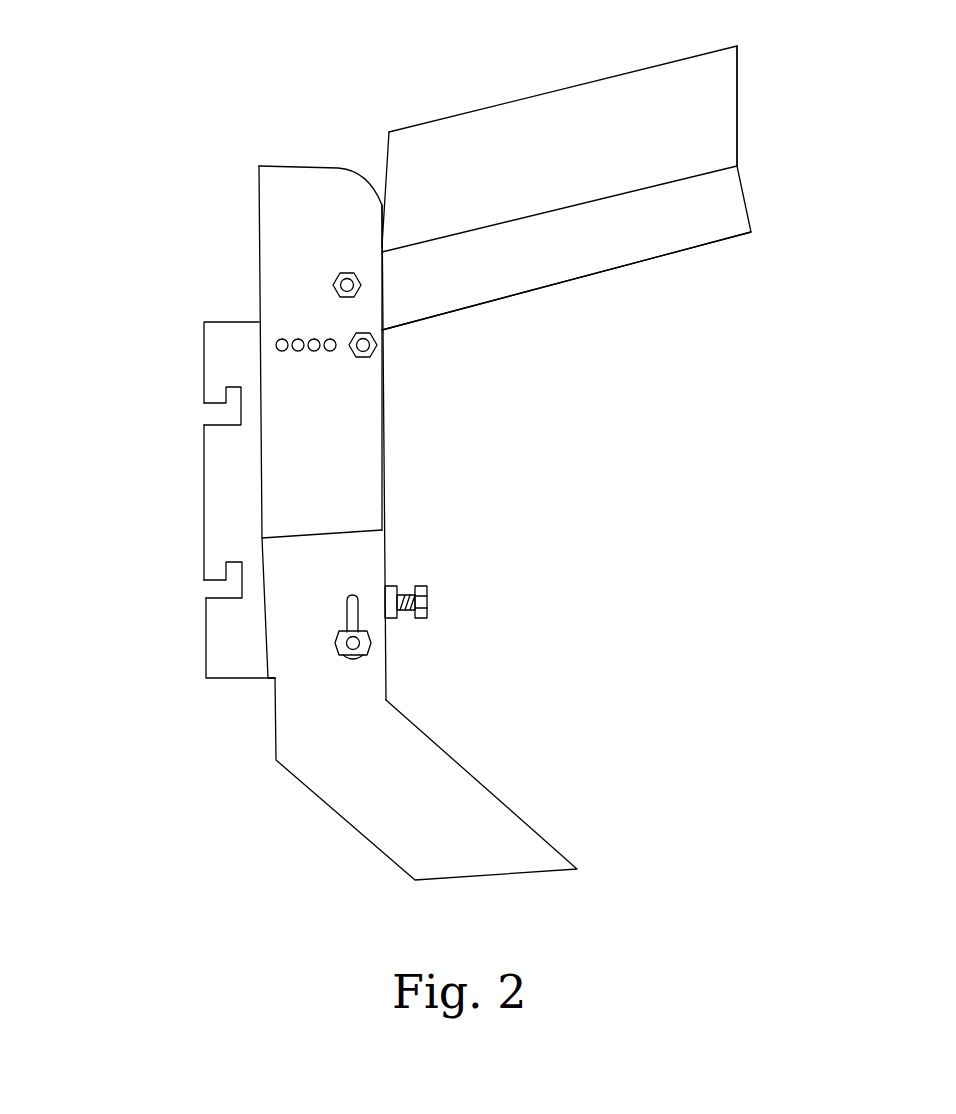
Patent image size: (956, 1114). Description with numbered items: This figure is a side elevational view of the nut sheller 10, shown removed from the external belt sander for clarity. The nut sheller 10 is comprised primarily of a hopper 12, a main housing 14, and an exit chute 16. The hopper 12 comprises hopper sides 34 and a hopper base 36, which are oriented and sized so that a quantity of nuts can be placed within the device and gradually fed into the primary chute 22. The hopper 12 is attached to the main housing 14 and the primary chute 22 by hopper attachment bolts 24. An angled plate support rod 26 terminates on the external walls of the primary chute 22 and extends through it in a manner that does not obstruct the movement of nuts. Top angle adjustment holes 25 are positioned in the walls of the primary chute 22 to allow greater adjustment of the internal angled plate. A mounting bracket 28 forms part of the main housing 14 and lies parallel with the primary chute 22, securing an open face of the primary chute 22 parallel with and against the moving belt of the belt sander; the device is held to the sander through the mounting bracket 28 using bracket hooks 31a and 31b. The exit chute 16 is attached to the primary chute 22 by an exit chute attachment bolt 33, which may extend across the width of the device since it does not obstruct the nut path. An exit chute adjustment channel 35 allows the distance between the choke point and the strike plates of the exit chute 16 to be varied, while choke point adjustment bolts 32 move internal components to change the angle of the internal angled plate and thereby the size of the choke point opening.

The nut sheller 10 is at (198, 110).
The hopper 12 is at (565, 70).
The main housing 14 is at (408, 404).
The exit chute 16 is at (505, 783).
The primary chute 22 is at (382, 436).
The hopper attachment bolts 24 is at (342, 270).
The top angle adjustment holes 25 is at (346, 355).
The angled plate support rod 26 is at (350, 333).
The mounting bracket 28 is at (218, 322).
The bracket hook 31a is at (195, 414).
The bracket hook 31b is at (195, 590).
The choke point adjustment bolts 32 is at (427, 600).
The exit chute attachment bolt 33 is at (340, 654).
The hopper sides 34 is at (738, 96).
The exit chute adjustment channel 35 is at (345, 617).
The hopper base 36 is at (650, 258).